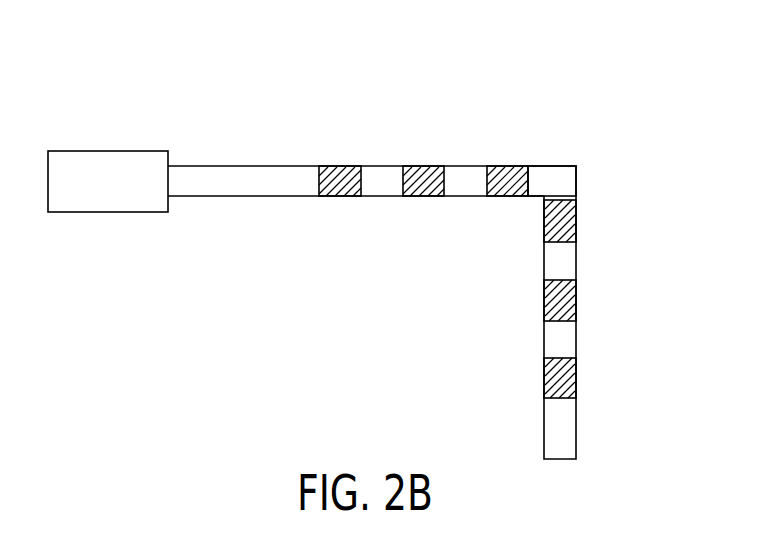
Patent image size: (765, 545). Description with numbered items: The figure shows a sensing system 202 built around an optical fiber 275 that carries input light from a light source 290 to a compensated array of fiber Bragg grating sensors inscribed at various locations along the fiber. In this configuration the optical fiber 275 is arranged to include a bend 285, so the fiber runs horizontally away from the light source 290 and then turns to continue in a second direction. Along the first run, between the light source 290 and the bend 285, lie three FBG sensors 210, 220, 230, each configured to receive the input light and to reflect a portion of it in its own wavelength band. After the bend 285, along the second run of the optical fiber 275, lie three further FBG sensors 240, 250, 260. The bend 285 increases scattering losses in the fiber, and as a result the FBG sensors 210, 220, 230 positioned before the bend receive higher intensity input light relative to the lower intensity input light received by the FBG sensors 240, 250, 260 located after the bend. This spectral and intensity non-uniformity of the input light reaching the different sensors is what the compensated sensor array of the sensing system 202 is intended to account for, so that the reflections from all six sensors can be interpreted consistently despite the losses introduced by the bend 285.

The sensing system 202 is at (586, 117).
The FBG sensor 210 is at (343, 182).
The FBG sensor 220 is at (430, 182).
The FBG sensor 230 is at (513, 174).
The FBG sensor 240 is at (570, 227).
The FBG sensor 250 is at (563, 302).
The FBG sensor 260 is at (563, 382).
The optical fiber 275 is at (232, 198).
The bend 285 is at (576, 166).
The light source 290 is at (110, 165).